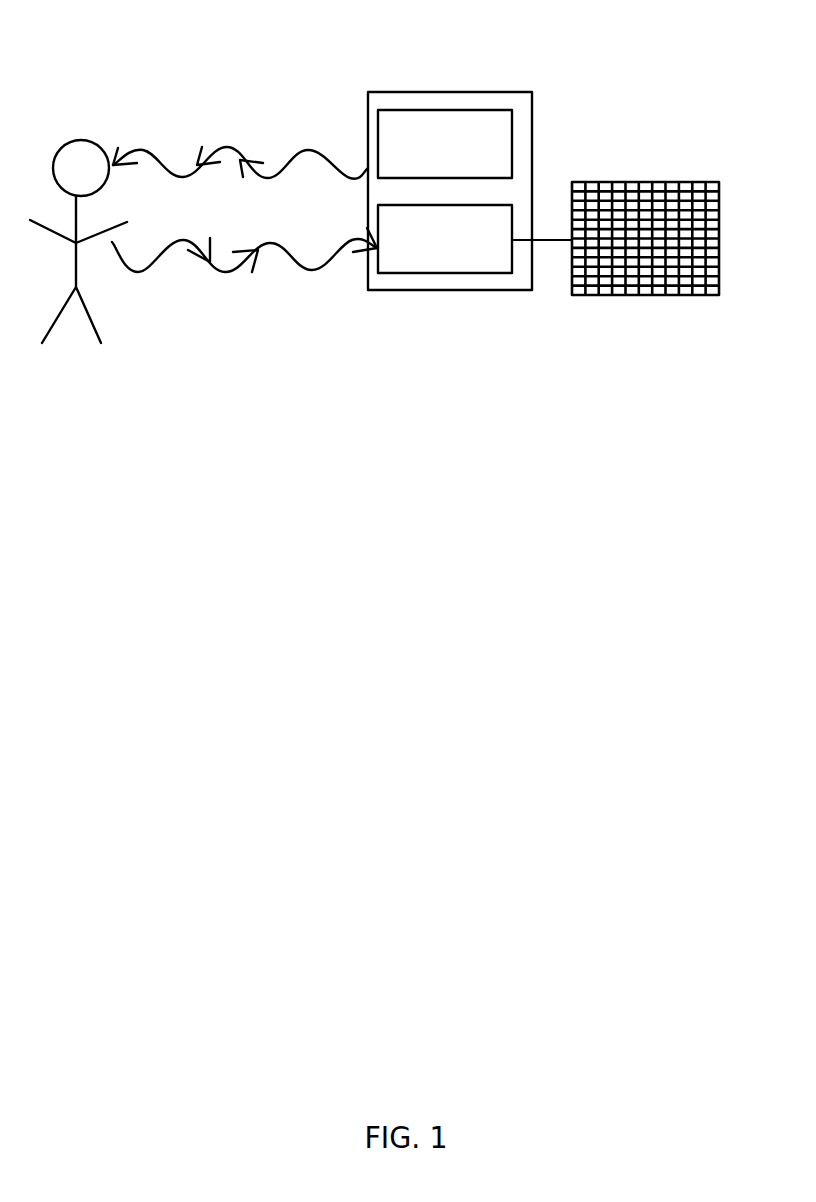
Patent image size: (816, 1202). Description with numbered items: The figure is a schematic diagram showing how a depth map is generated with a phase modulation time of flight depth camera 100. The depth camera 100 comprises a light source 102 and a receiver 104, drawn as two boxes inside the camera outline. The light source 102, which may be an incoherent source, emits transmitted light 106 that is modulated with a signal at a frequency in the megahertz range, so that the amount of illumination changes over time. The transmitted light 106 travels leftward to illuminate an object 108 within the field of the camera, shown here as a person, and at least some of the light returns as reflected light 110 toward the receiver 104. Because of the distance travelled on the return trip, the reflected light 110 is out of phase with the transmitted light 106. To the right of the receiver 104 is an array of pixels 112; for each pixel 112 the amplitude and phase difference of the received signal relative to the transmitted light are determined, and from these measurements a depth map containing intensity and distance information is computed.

The depth camera 100 is at (455, 92).
The light source 102 is at (532, 140).
The receiver 104 is at (445, 273).
The transmitted light 106 is at (238, 148).
The object 108 is at (86, 141).
The reflected light 110 is at (298, 268).
The pixel 112 is at (645, 295).